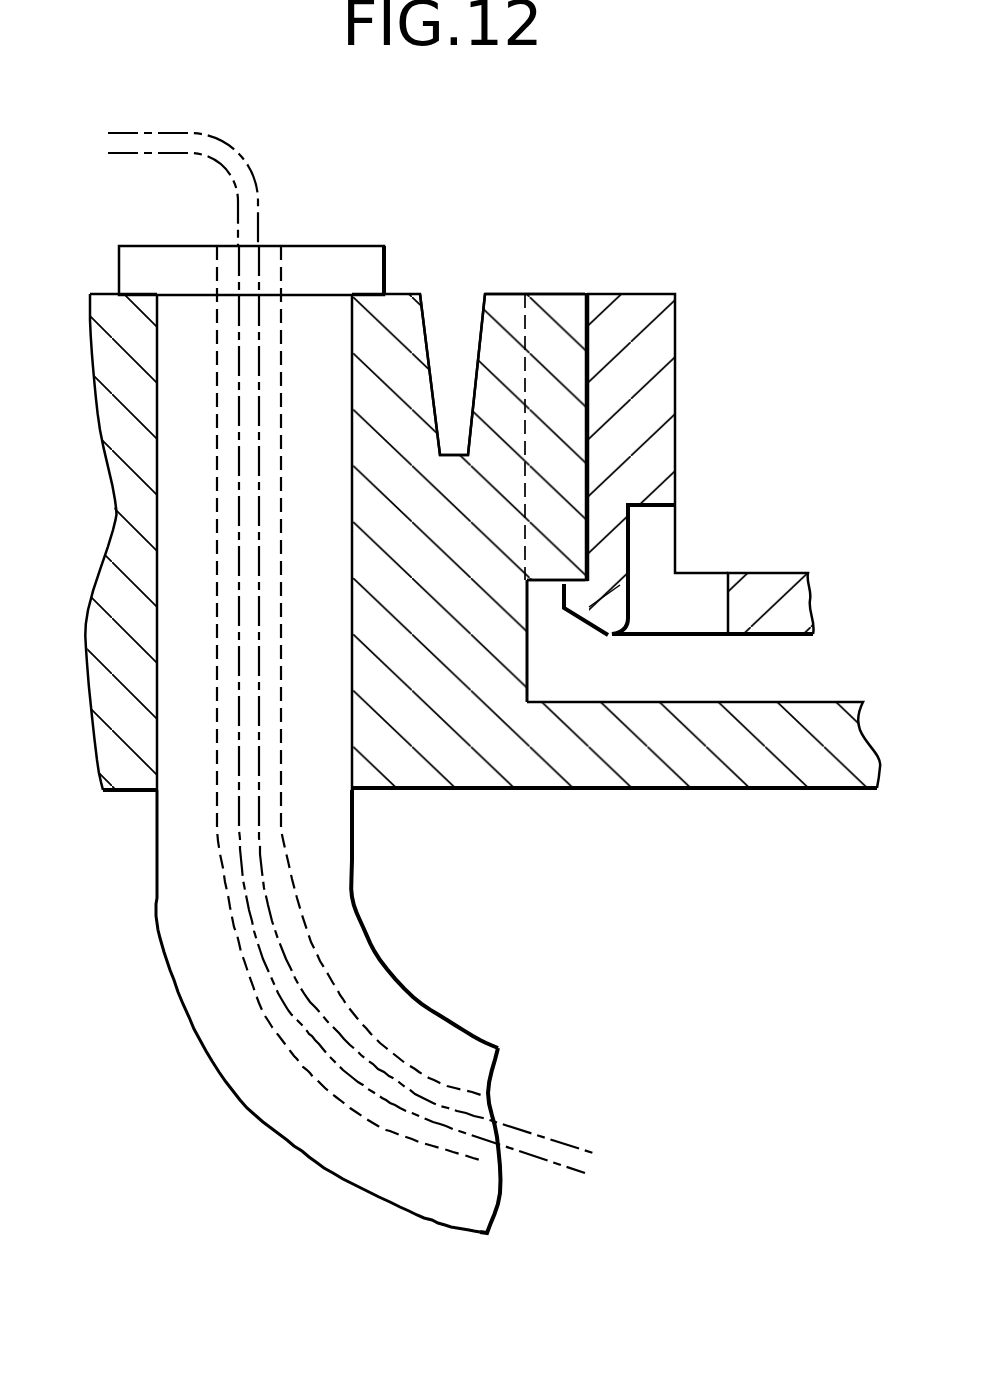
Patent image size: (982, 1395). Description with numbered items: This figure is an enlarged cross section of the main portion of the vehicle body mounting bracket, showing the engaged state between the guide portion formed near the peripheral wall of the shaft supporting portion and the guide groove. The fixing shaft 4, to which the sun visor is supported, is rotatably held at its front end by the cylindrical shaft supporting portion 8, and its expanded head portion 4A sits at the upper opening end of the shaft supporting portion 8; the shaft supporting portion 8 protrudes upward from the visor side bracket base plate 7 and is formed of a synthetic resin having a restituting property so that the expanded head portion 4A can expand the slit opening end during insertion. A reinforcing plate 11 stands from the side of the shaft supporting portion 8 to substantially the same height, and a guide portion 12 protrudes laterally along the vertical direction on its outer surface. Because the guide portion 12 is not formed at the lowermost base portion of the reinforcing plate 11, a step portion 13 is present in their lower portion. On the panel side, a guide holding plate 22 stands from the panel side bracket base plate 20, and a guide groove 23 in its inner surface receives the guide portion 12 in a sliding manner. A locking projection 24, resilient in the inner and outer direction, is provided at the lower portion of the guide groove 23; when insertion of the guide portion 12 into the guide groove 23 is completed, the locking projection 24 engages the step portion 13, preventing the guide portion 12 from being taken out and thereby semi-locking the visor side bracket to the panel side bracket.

The fixing shaft 4 is at (168, 972).
The expanded head portion 4A is at (337, 252).
The visor side bracket base plate 7 is at (763, 768).
The shaft supporting portion 8 is at (436, 308).
The reinforcing plate 11 is at (497, 303).
The guide portion 12 is at (565, 305).
The step portion 13 is at (547, 585).
The panel side bracket base plate 20 is at (765, 583).
The guide holding plate 22 is at (635, 322).
The guide groove 23 is at (600, 422).
The locking projection 24 is at (610, 638).